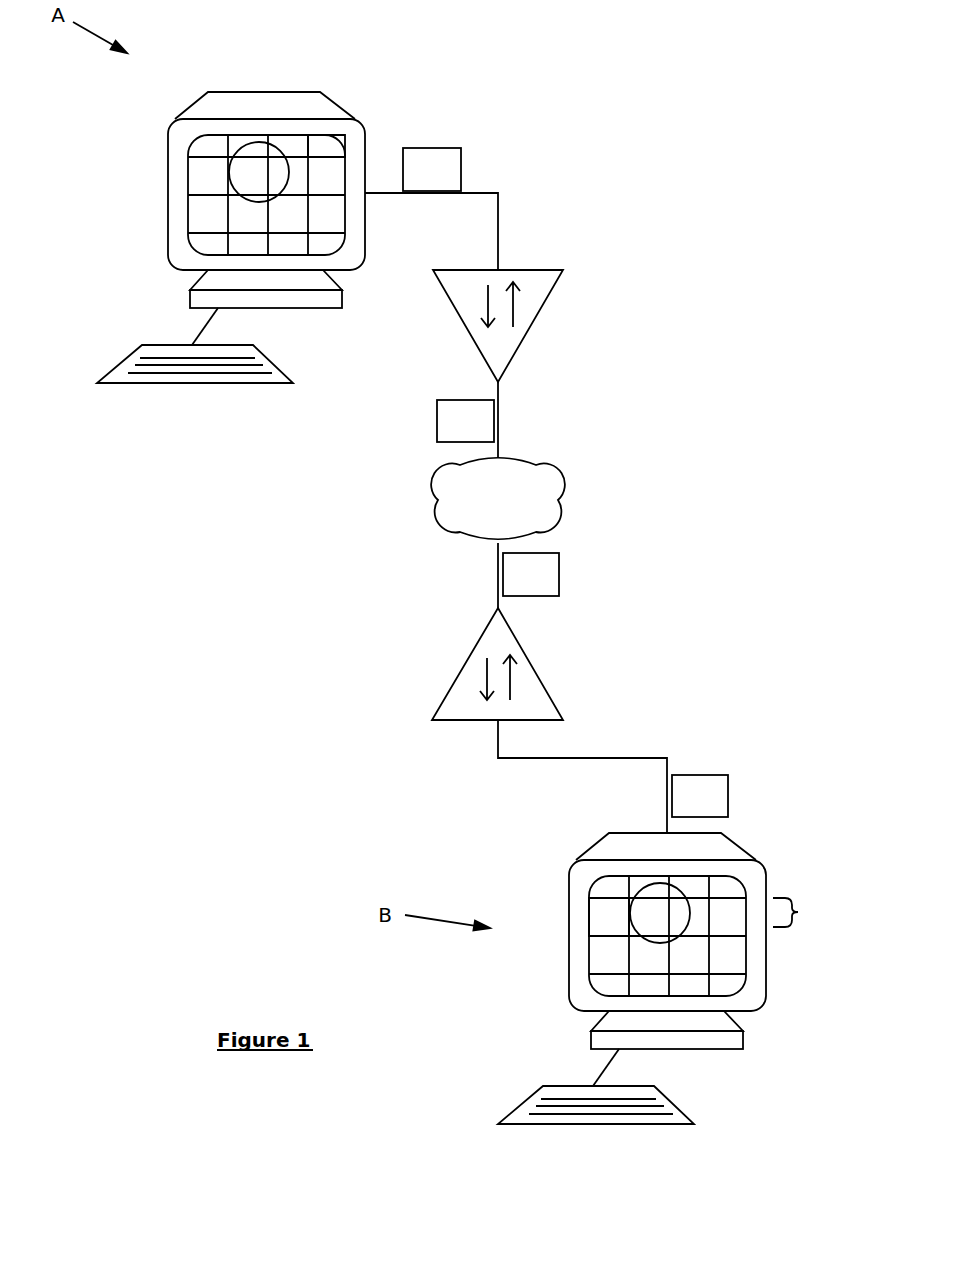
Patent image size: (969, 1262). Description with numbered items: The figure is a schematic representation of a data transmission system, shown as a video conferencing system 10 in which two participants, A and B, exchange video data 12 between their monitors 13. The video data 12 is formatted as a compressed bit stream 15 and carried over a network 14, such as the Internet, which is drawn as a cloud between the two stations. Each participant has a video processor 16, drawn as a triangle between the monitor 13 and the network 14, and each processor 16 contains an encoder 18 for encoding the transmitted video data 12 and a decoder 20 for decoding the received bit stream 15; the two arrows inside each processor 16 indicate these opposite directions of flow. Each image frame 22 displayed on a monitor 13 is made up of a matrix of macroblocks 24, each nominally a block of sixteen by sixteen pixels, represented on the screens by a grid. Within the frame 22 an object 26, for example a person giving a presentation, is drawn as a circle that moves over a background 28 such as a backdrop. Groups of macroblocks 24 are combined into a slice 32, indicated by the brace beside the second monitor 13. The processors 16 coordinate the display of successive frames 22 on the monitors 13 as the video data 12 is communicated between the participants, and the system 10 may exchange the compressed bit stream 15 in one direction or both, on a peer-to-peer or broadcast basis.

The video conferencing system 10 is at (568, 203).
The video data 12 is at (565, 482).
The monitor 13 is at (235, 92).
The network 14 is at (498, 498).
The compressed bit stream 15 is at (498, 498).
The video processor 16 is at (596, 278).
The encoder 18 is at (488, 298).
The decoder 20 is at (513, 305).
The image frame 22 is at (187, 222).
The macroblock 24 is at (212, 147).
The object 26 is at (277, 145).
The background 28 is at (323, 147).
The slice 32 is at (801, 912).